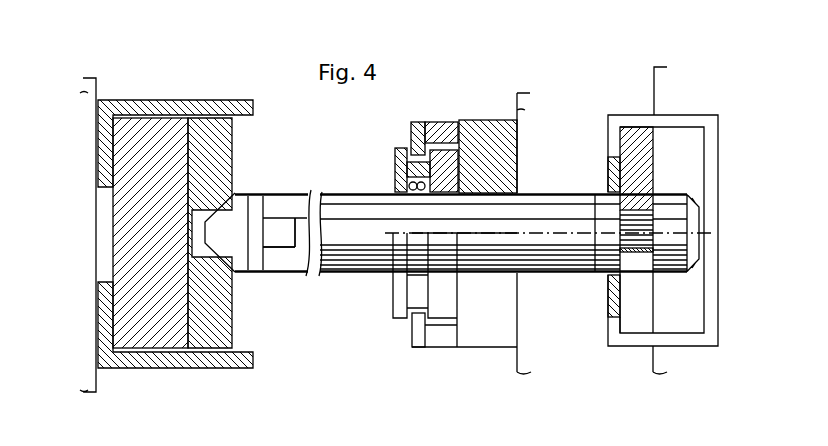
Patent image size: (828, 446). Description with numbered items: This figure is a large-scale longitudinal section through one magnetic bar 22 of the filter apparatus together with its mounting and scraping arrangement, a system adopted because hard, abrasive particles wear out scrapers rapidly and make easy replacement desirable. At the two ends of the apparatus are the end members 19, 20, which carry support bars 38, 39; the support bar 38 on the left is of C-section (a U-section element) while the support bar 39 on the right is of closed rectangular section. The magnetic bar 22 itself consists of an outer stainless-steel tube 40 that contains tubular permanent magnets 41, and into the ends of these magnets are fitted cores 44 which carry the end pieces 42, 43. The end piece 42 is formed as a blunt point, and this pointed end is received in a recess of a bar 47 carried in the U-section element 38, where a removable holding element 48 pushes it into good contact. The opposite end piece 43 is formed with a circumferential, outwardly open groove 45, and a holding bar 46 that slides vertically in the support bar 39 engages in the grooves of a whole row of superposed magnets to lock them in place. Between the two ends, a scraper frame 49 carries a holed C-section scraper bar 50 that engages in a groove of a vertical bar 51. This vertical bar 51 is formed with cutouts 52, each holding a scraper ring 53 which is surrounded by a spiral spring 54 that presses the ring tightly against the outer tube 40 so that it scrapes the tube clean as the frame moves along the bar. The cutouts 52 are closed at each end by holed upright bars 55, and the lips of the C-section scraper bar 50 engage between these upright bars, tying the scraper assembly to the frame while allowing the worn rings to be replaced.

The end member 19 is at (100, 90).
The support bar 38 is at (168, 100).
The removable holding element 48 is at (158, 335).
The bar 47 is at (233, 315).
The end piece 42 is at (248, 265).
The outer stainless-steel tube 40 is at (270, 193).
The tubular permanent magnets 41 is at (285, 208).
The core 44 is at (295, 238).
The magnetic bar 22 is at (335, 190).
The end piece 43 is at (600, 264).
The C-section scraper bar 50 is at (478, 120).
The cutout 52 is at (432, 120).
The spiral spring 54 is at (397, 176).
The scraper ring 53 is at (408, 188).
The scraper frame 49 is at (515, 108).
The vertical bar 51 is at (415, 290).
The holed upright bar 55 is at (442, 314).
The end member 20 is at (663, 91).
The support bar 39 is at (615, 118).
The holding bar 46 is at (633, 126).
The groove 45 is at (607, 302).